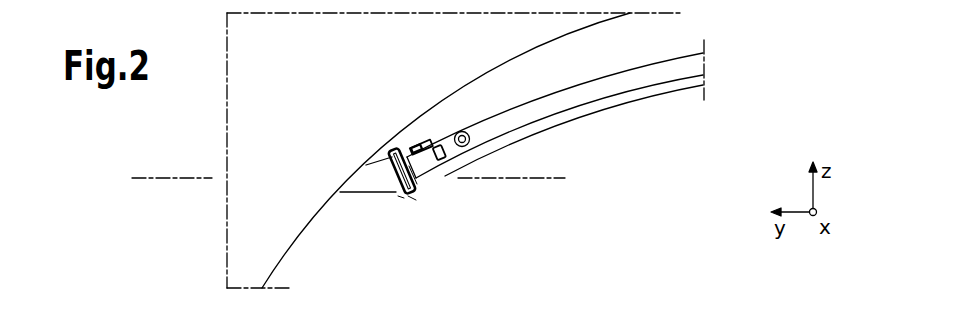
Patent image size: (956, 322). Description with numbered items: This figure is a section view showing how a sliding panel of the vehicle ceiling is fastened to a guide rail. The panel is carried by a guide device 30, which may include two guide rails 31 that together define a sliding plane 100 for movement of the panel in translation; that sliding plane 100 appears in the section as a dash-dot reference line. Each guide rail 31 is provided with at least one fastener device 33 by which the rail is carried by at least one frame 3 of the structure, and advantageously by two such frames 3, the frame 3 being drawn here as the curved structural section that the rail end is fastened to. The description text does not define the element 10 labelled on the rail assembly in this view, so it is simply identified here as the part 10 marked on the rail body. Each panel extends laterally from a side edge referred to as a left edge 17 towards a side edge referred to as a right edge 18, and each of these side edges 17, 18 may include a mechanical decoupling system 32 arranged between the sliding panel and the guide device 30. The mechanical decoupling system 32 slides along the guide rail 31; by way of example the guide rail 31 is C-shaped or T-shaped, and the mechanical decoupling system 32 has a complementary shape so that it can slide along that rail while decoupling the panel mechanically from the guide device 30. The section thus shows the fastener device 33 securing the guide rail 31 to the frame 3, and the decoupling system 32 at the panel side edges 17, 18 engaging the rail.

The frame 3 is at (248, 258).
The sliding plane 100 is at (172, 178).
The rail 10 is at (627, 105).
The mechanical decoupling system 32 is at (433, 147).
The fastener device 33 is at (384, 192).
The left edge 17 is at (492, 202).
The right edge 18 is at (425, 185).
The guide device 30 is at (413, 202).
The guide rail 31 is at (403, 202).